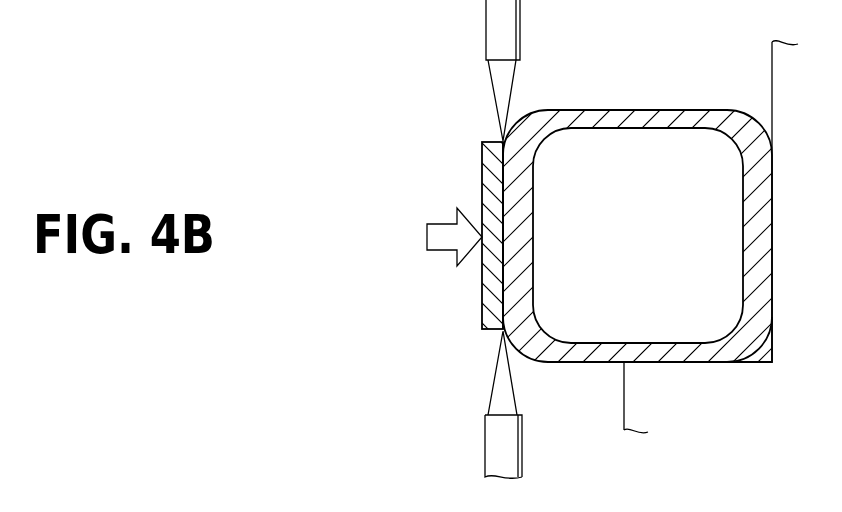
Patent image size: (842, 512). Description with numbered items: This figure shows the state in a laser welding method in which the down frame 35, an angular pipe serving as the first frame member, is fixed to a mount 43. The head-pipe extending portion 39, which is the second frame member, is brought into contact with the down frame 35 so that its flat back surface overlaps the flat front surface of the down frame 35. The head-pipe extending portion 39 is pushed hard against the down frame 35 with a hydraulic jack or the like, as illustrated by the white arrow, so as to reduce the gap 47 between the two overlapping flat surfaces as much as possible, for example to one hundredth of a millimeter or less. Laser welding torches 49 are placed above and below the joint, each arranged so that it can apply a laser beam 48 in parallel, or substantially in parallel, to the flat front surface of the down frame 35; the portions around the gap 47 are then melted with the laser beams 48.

The down frame 35 is at (625, 118).
The head-pipe extending portion 39 is at (481, 165).
The mount 43 is at (637, 395).
The gap 47 is at (508, 172).
The laser beam 48 is at (500, 95).
The laser welding torch 49 is at (499, 21).